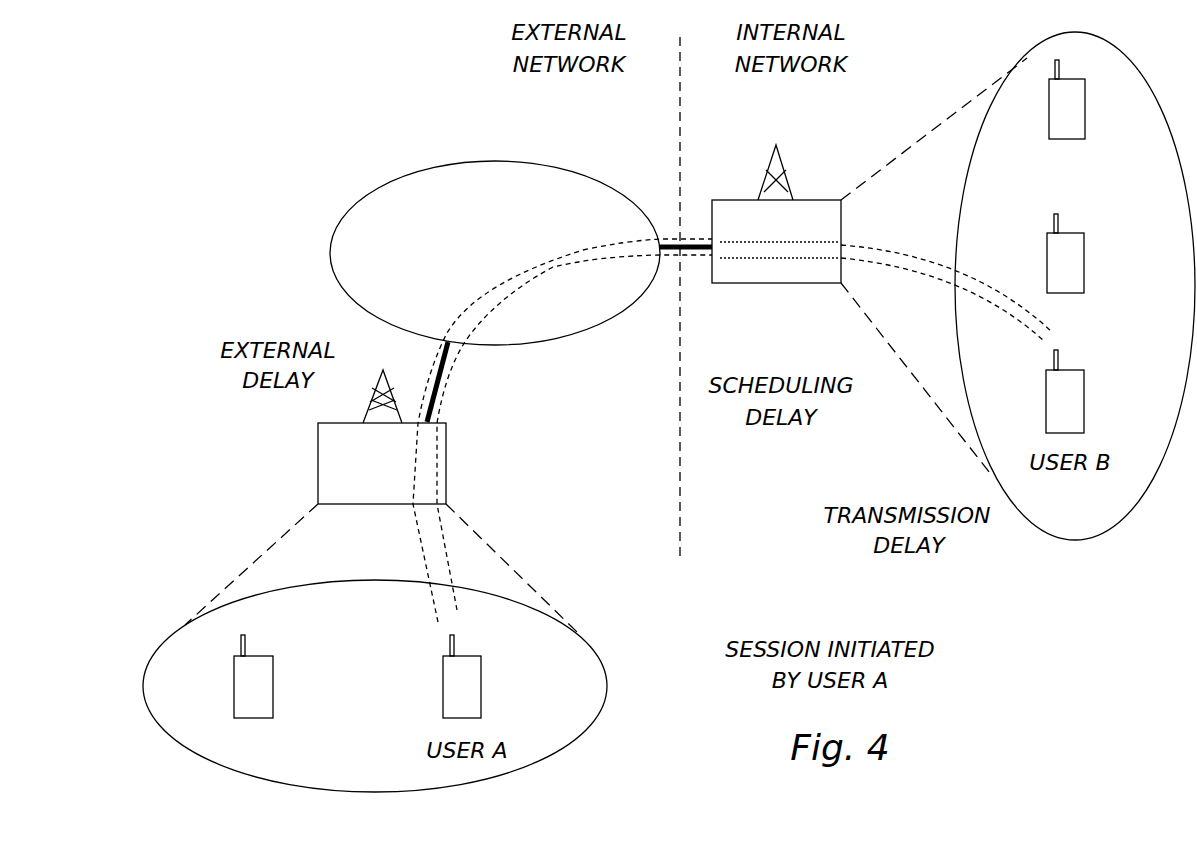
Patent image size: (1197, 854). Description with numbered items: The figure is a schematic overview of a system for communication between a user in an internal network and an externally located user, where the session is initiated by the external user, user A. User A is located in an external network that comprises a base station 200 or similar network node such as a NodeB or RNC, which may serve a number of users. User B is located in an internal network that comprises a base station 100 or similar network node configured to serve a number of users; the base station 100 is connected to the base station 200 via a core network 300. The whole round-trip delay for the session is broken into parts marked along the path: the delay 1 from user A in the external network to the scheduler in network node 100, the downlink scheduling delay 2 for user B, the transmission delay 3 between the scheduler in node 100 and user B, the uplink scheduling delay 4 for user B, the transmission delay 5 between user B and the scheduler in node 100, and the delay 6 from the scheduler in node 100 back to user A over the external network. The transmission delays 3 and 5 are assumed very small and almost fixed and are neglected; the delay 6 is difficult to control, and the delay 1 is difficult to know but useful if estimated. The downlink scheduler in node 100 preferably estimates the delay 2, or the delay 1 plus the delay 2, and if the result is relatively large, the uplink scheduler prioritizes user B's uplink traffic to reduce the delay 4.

The core network 300 is at (330, 253).
The base station 200 is at (447, 462).
The base station 100 is at (775, 283).
The delay from user A to scheduler 1 is at (453, 377).
The downlink scheduling delay 2 is at (733, 283).
The downlink transmission delay 3 is at (908, 273).
The uplink scheduling delay 4 is at (728, 200).
The uplink transmission delay 5 is at (917, 259).
The delay from scheduler to user A 6 is at (428, 372).